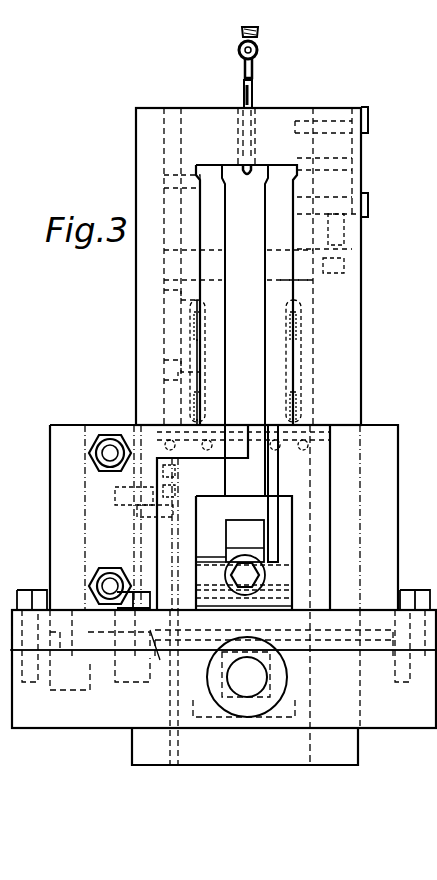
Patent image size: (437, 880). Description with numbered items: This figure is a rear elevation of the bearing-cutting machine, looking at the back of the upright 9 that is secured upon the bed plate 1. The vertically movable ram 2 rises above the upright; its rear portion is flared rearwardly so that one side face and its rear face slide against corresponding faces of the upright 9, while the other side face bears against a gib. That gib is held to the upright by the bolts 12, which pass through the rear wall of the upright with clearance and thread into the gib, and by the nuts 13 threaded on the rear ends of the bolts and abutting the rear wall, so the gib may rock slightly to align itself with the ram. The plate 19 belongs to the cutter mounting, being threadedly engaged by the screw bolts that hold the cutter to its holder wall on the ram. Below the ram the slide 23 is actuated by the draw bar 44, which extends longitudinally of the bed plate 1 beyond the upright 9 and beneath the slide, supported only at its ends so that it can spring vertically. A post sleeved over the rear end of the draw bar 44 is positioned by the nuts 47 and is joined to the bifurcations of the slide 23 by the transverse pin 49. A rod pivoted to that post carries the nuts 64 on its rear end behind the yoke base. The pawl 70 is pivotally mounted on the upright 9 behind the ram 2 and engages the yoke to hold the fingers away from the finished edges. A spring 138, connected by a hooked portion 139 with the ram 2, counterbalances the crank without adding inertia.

The bed plate 1 is at (398, 725).
The ram 2 is at (143, 318).
The upright 9 is at (376, 432).
The bolts 12 is at (108, 450).
The nuts 13 is at (113, 433).
The plate 19 is at (313, 364).
The slide 23 is at (258, 513).
The draw bar 44 is at (258, 620).
The nuts 47 is at (290, 690).
The pin 49 is at (290, 572).
The nuts 64 is at (250, 570).
The pawl 70 is at (275, 478).
The spring 138 is at (262, 35).
The hooked portion 139 is at (249, 178).